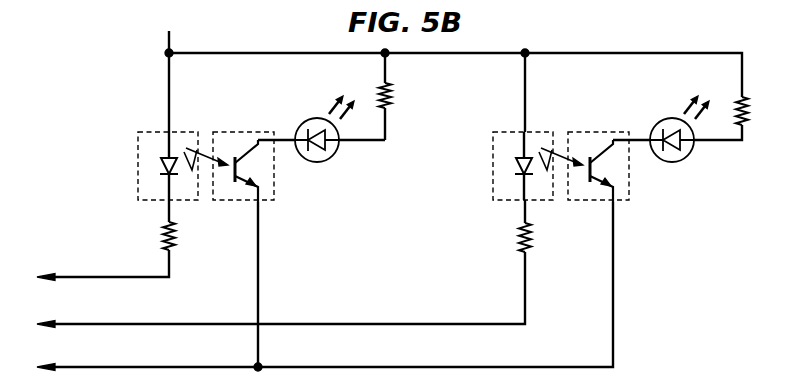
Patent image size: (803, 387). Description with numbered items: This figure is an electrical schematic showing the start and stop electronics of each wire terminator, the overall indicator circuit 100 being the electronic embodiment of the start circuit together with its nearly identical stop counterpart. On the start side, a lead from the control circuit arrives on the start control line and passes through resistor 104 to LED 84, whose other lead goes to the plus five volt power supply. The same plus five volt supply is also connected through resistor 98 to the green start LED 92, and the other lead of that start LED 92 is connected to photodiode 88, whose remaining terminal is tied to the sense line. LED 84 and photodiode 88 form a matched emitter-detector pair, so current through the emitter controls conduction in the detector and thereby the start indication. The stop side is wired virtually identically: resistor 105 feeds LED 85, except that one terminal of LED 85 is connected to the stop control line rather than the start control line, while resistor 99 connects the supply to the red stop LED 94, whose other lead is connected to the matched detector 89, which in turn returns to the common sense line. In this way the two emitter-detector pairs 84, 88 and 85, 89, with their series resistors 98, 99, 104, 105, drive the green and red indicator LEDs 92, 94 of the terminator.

The indicator circuit 100 is at (117, 100).
The LED 84 is at (190, 132).
The LED 85 is at (535, 132).
The photodiode 88 is at (228, 132).
The detector of matched emitter detector pair 89 is at (610, 132).
The green start LED light 92 is at (323, 158).
The red stop LED light 94 is at (678, 158).
The resistor 98 is at (391, 96).
The resistor 99 is at (748, 113).
The resistor 104 is at (176, 236).
The resistor 105 is at (532, 236).